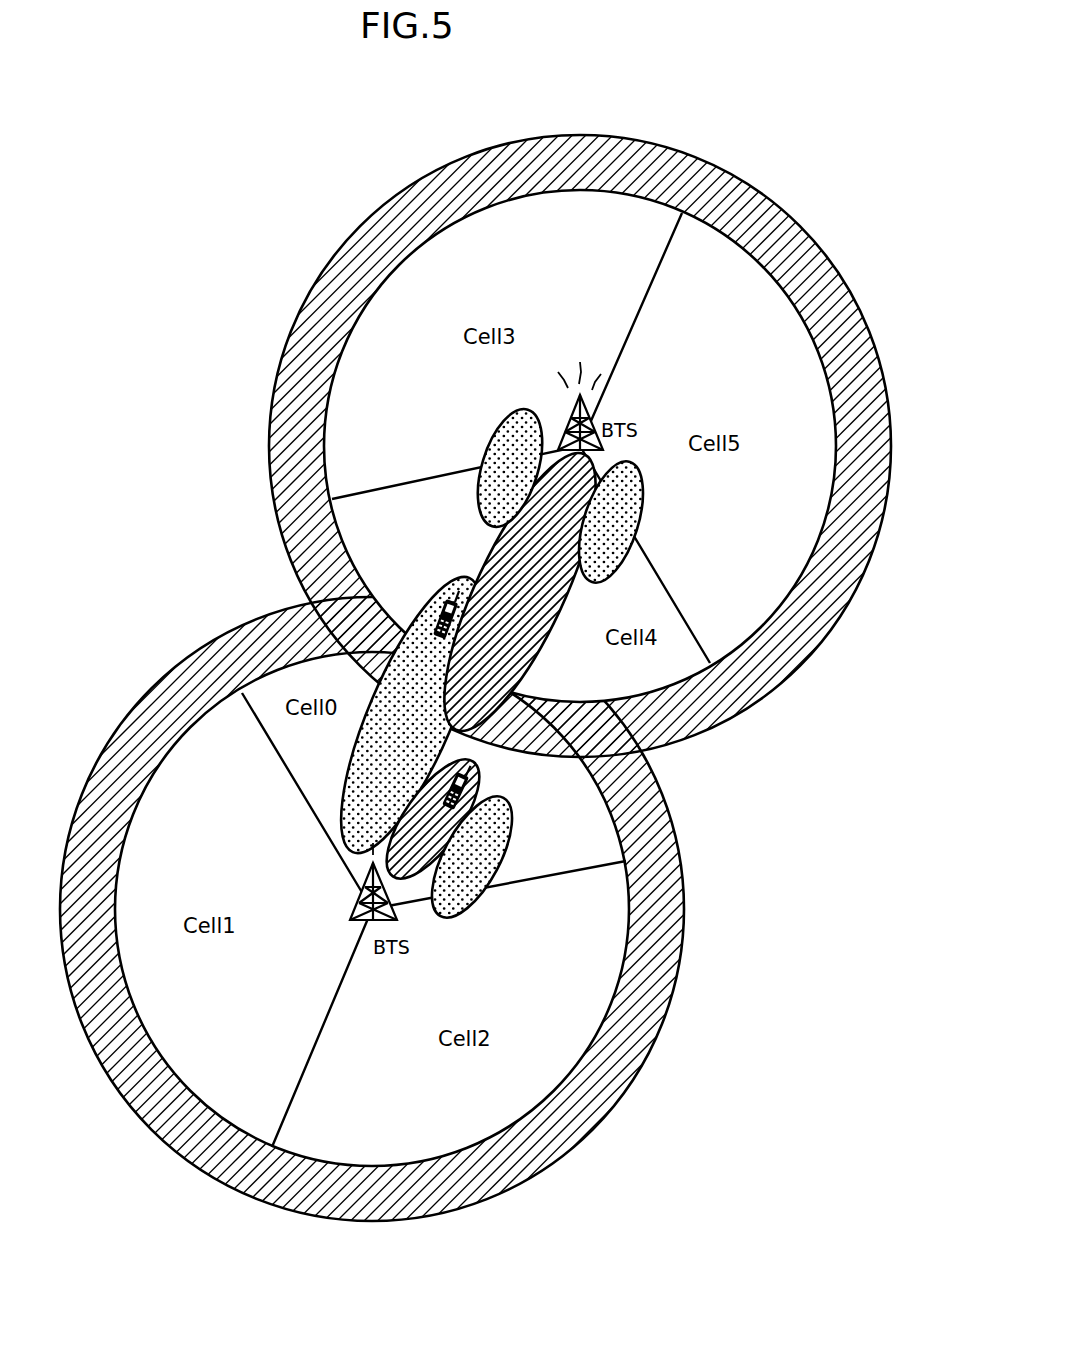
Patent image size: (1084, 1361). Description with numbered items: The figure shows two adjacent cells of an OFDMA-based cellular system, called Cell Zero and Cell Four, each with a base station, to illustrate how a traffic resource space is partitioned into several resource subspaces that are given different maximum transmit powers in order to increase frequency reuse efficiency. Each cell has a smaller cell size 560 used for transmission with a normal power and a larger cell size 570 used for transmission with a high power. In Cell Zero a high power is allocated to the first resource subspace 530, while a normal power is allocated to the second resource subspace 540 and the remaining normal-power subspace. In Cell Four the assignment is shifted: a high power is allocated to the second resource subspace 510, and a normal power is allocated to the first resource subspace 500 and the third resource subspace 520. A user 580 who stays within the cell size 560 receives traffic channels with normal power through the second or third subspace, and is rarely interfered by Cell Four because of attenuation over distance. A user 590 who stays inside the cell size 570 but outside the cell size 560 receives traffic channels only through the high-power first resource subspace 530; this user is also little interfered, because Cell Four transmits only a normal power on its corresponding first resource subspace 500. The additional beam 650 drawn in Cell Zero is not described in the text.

The first resource subspace 500 is at (642, 508).
The second resource subspace 510 is at (546, 634).
The third resource subspace 520 is at (497, 440).
The first resource subspace 530 is at (358, 776).
The second resource subspace 540 is at (466, 766).
The cell size for normal-power transmission 560 is at (615, 1023).
The cell size for high-power transmission 570 is at (598, 1123).
The user within the cell 580 is at (469, 781).
The user on the border of a cell 590 is at (440, 604).
The beam of Cell2 650 is at (503, 860).